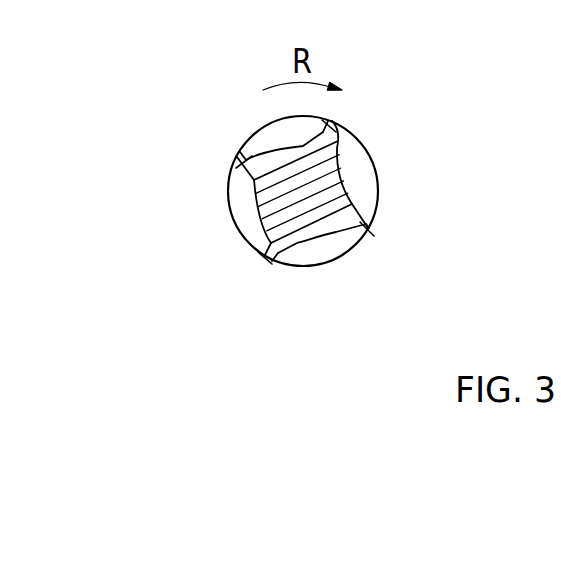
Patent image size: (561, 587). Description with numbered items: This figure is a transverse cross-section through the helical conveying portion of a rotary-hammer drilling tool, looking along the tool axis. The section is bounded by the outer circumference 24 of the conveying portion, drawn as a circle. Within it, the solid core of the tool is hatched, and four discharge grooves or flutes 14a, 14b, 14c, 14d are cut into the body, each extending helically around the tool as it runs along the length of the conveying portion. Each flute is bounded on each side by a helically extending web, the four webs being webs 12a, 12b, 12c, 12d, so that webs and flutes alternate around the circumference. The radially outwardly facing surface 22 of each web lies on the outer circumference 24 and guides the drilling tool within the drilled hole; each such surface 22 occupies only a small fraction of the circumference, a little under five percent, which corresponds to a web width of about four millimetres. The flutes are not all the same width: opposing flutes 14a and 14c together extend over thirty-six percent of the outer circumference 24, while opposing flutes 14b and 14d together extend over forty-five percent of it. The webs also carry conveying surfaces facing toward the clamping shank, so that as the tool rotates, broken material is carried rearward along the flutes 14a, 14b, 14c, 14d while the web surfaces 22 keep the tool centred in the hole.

The helical web 12a is at (328, 133).
The helical web 12b is at (250, 155).
The helical web 12c is at (278, 262).
The helical web 12d is at (362, 229).
The helical flute 14a is at (273, 132).
The helical flute 14b is at (242, 200).
The helical flute 14c is at (332, 263).
The helical flute 14d is at (360, 178).
The radially outwardly facing surface 22 is at (250, 160).
The outer circumference 24 is at (378, 205).